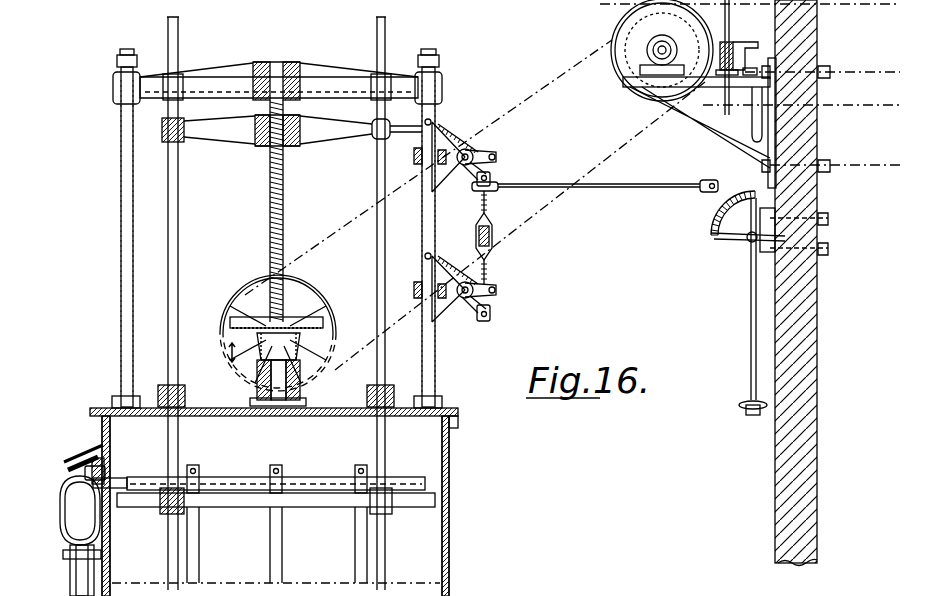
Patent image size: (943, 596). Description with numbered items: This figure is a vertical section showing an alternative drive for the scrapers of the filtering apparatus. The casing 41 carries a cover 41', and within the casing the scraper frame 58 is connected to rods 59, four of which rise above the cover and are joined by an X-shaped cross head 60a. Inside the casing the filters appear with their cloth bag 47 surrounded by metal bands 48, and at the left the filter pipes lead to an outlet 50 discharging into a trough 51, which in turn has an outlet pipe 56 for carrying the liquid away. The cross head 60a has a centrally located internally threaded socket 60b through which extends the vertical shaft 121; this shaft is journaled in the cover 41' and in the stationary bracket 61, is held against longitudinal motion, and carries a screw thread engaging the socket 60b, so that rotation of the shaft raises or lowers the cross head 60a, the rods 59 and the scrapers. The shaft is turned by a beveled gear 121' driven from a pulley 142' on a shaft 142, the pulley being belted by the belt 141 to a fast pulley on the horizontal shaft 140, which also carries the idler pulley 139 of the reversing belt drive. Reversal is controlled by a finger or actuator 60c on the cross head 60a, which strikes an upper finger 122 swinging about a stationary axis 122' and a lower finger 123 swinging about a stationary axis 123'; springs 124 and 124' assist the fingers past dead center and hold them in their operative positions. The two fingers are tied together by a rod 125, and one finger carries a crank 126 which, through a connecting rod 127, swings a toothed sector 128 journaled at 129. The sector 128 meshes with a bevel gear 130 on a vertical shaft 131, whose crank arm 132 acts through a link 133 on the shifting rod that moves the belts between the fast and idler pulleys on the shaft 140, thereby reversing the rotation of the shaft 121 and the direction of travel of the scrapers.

The stationary bracket 61 is at (314, 70).
The cross head 60a is at (219, 138).
The internally threaded socket 60b is at (302, 142).
The actuator 60c is at (400, 142).
The vertical shaft 121 is at (307, 211).
The beveled gear 121' is at (264, 348).
The shaft 142 is at (293, 333).
The pulley 142' is at (281, 336).
The rods 59 is at (170, 445).
The casing 41 is at (291, 506).
The cover 41' is at (274, 424).
The scraper frame 58 is at (300, 495).
The cloth bag 47 is at (330, 482).
The metal bands 48 is at (272, 481).
The outlet 50 is at (80, 495).
The trough 51 is at (60, 520).
The outlet pipe 56 is at (72, 570).
The upper finger 122 is at (461, 142).
The axis of upper finger 122' is at (502, 145).
The crank 126 is at (492, 176).
The connecting rod 127 is at (594, 190).
The rod 125 is at (492, 214).
The lower finger 123 is at (455, 274).
The spring 124' is at (506, 277).
The axis of lower finger 123' is at (473, 320).
The spring 124 is at (428, 167).
The belt 141 is at (618, 138).
The idler pulley 139 is at (615, 30).
The horizontal shaft 140 is at (658, 52).
The link 133 is at (734, 44).
The crank arm 132 is at (750, 42).
The bevel gear 130 is at (752, 196).
The toothed sector 128 is at (714, 233).
The journal of sector 129 is at (748, 240).
The vertical shaft 131 is at (751, 333).